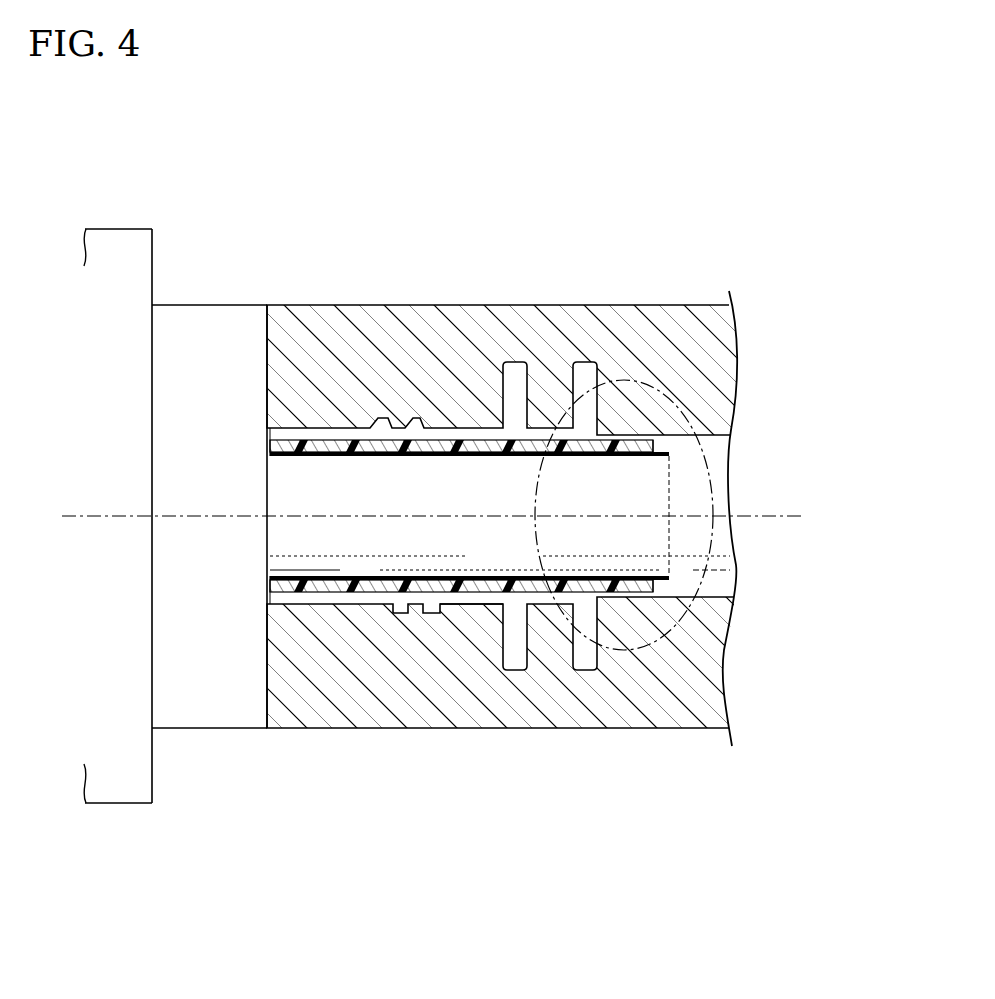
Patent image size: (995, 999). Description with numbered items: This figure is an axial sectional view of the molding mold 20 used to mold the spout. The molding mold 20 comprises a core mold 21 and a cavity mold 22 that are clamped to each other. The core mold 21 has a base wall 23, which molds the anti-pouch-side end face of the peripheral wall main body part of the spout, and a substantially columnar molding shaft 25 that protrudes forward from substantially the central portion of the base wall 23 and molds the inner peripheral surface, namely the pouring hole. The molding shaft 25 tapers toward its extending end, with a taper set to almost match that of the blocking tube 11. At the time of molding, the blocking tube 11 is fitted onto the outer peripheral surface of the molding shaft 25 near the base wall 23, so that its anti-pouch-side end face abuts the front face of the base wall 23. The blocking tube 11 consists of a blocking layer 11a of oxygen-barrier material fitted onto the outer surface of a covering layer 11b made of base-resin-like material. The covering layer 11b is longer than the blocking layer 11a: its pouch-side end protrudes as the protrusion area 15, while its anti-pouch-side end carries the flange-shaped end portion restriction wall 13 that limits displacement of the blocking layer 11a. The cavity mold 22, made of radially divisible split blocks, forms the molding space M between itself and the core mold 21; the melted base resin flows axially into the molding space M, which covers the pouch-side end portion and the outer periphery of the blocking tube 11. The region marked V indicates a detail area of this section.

The molding mold 20 is at (497, 504).
The core mold 21 is at (198, 740).
The cavity mold 22 is at (618, 740).
The base wall 23 is at (240, 340).
The molding shaft 25 is at (724, 482).
The blocking tube 11 is at (533, 517).
The blocking layer 11a is at (373, 448).
The covering layer 11b is at (380, 443).
The end portion restriction wall 13 is at (277, 592).
The protrusion area 15 is at (663, 583).
The enlarged view region V is at (703, 447).
The molding space M is at (488, 606).